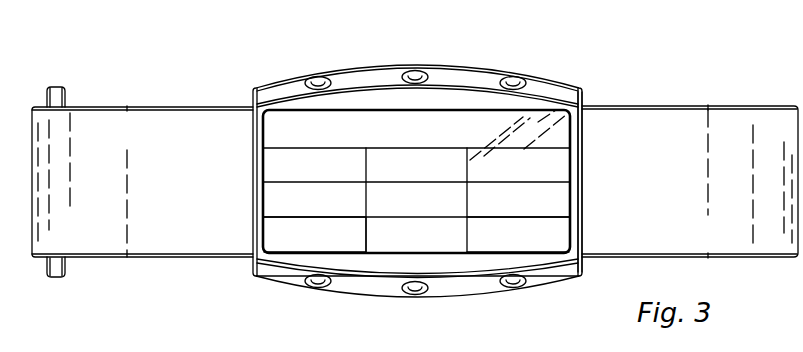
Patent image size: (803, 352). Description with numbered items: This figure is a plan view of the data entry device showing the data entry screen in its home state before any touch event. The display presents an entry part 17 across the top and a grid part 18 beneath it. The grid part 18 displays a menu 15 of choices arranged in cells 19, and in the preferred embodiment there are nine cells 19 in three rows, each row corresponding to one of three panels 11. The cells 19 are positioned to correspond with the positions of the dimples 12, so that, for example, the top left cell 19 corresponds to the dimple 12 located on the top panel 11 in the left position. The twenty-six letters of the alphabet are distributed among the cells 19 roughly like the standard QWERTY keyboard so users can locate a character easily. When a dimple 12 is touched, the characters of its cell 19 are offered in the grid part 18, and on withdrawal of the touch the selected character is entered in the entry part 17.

The top panel 11 is at (303, 80).
The dimple 12 is at (304, 279).
The menu 15 is at (455, 235).
The entry part 17 is at (578, 100).
The grid part 18 is at (562, 235).
The cell 19 is at (272, 237).